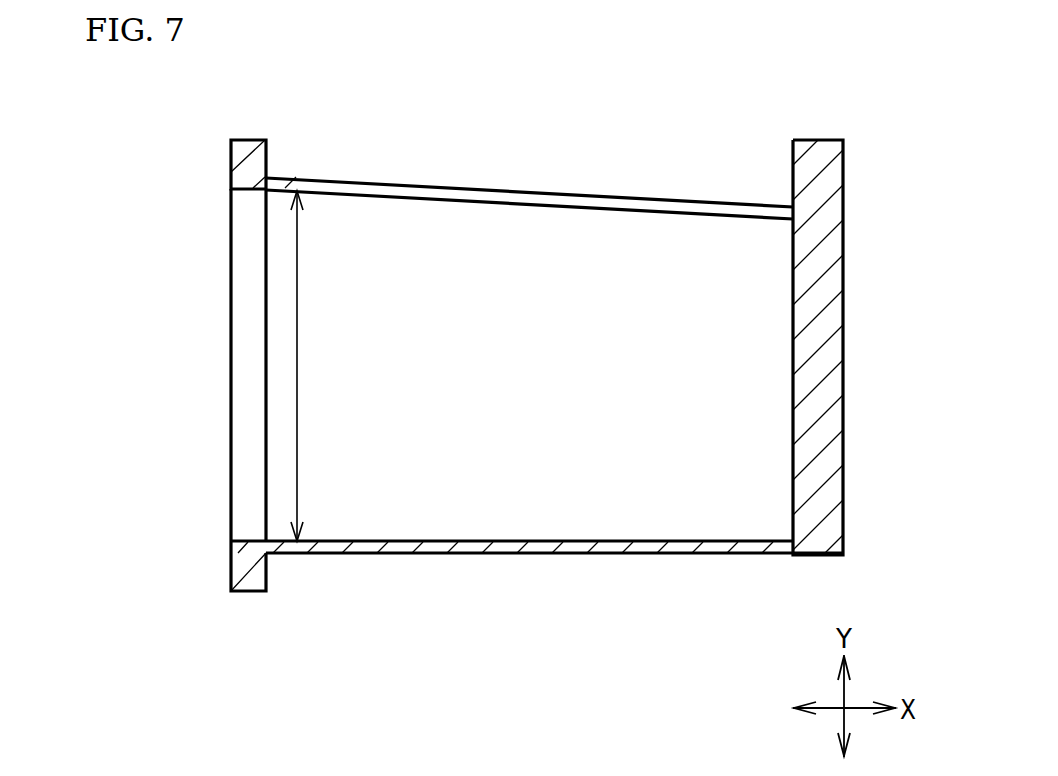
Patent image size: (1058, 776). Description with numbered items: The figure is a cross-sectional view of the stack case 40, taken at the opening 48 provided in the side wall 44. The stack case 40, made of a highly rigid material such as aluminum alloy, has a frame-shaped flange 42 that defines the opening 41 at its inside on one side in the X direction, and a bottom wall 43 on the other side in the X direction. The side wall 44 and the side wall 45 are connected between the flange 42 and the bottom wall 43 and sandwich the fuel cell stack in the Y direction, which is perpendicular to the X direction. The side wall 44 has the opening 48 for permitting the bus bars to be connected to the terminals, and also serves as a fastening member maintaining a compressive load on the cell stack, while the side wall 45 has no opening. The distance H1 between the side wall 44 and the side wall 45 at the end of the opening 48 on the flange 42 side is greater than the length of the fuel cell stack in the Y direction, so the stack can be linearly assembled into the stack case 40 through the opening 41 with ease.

The stack case 40 is at (843, 288).
The opening 41 is at (243, 336).
The flange 42 is at (240, 170).
The bottom wall 43 is at (828, 384).
The side wall 44 is at (529, 165).
The side wall 45 is at (585, 548).
The opening 48 is at (517, 197).